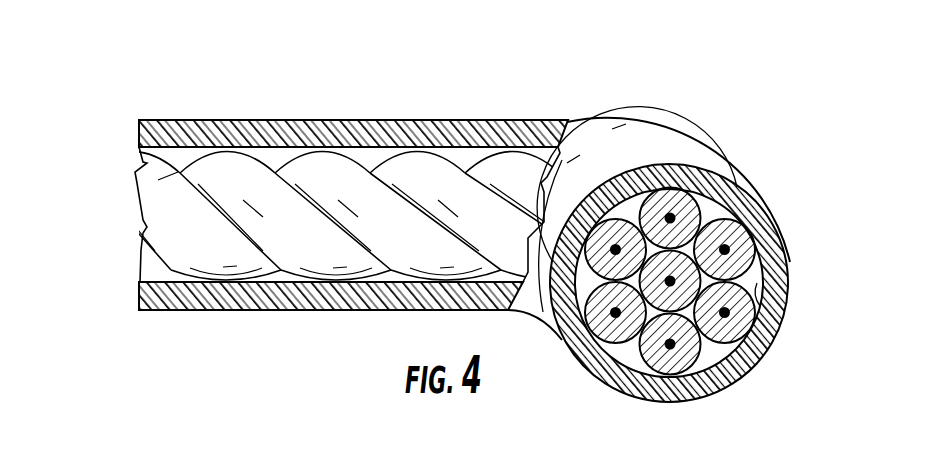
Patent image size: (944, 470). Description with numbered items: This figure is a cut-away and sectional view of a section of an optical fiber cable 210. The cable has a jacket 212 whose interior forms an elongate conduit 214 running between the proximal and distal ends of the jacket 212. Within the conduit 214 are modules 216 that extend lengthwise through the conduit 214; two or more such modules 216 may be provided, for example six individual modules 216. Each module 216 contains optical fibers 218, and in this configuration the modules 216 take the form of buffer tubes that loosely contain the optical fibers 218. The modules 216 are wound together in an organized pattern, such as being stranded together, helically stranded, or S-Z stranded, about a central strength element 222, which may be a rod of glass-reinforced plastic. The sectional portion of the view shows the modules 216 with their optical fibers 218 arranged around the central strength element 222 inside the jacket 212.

The optical fiber cable 210 is at (90, 85).
The jacket 212 is at (535, 147).
The conduit 214 is at (263, 147).
The modules 216 is at (430, 172).
The optical fibers 218 is at (730, 235).
The central strength element 222 is at (663, 292).